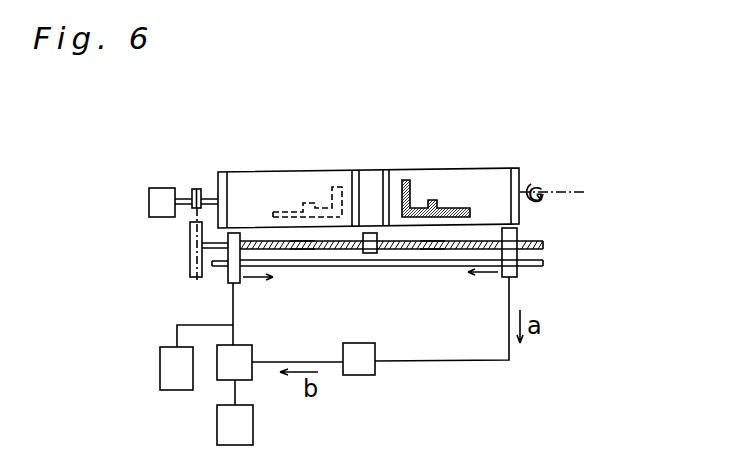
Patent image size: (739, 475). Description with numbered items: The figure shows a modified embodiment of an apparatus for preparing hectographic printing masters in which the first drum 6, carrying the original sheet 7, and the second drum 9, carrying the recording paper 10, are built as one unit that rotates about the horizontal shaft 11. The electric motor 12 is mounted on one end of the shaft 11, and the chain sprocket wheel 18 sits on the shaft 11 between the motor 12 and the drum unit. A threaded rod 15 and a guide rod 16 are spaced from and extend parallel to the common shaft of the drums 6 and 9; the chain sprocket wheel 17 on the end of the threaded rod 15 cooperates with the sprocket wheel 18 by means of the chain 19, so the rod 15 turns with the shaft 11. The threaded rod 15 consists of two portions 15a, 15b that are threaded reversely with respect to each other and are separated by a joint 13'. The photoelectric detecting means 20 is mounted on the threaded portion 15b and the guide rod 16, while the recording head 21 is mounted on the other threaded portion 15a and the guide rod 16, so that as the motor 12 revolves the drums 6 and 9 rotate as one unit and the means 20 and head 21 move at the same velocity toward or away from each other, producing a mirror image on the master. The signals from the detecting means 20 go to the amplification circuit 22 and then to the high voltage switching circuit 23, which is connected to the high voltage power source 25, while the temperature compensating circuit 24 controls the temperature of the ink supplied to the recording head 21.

The first drum 6 is at (523, 182).
The original sheet 7 is at (475, 179).
The second drum 9 is at (218, 186).
The recording paper 10 is at (283, 186).
The horizontal shaft 11 is at (190, 196).
The electric motor 12 is at (149, 201).
The joint 13' is at (381, 287).
The threaded rod 15 is at (538, 239).
The threaded portion 15a is at (303, 250).
The threaded portion 15b is at (432, 251).
The guide rod 16 is at (545, 262).
The chain sprocket wheel 17 is at (190, 258).
The chain sprocket wheel 18 is at (196, 189).
The chain 19 is at (190, 220).
The photoelectric detecting means 20 is at (512, 270).
The recording head 21 is at (228, 277).
The amplification circuit 22 is at (363, 375).
The high voltage switching circuit 23 is at (240, 370).
The temperature compensating circuit 24 is at (167, 368).
The high voltage power source 25 is at (226, 424).